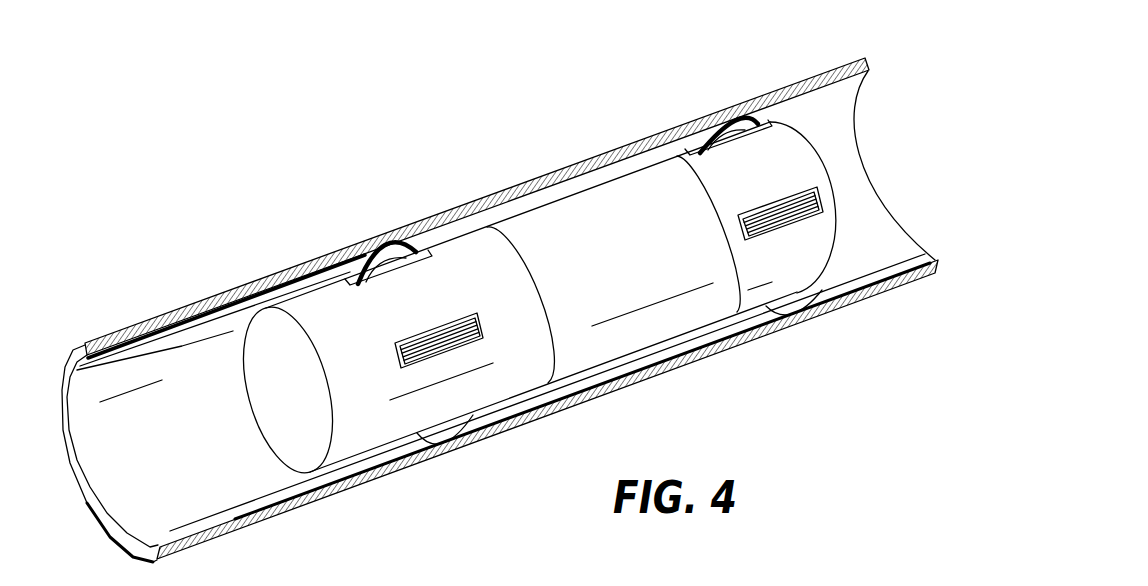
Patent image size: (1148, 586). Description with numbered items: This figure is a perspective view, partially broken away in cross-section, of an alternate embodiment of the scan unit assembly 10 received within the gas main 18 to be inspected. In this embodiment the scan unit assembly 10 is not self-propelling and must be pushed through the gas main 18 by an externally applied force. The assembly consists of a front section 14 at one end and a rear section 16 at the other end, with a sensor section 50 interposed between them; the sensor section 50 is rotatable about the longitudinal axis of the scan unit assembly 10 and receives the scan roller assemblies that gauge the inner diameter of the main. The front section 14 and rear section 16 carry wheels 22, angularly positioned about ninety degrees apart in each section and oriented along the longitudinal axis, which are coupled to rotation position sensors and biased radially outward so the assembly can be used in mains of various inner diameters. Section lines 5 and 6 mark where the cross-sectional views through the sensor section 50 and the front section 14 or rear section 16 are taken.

The scan unit assembly 10 is at (500, 301).
The front section 14 is at (318, 308).
The rear section 16 is at (800, 153).
The gas main 18 is at (867, 299).
The wheels 22 is at (407, 258).
The sensor section 50 is at (657, 187).
The section line 5- 5 is at (528, 172).
The section line 6- 6 is at (840, 193).